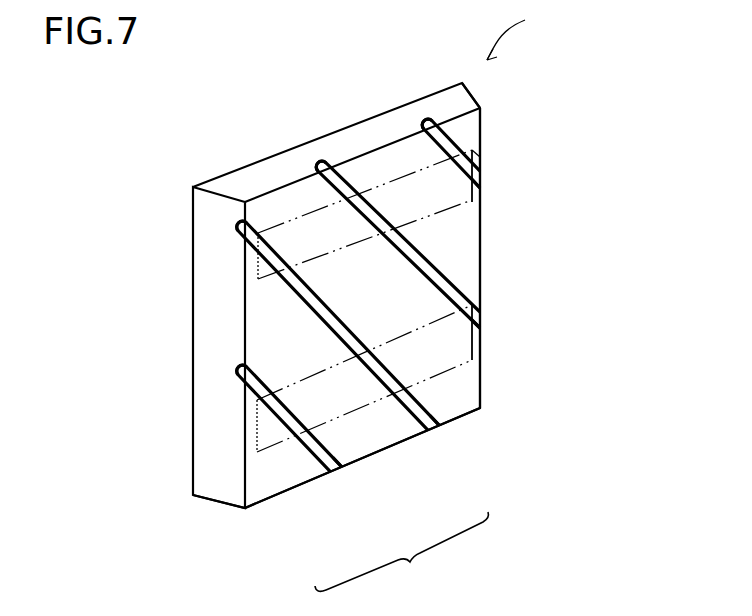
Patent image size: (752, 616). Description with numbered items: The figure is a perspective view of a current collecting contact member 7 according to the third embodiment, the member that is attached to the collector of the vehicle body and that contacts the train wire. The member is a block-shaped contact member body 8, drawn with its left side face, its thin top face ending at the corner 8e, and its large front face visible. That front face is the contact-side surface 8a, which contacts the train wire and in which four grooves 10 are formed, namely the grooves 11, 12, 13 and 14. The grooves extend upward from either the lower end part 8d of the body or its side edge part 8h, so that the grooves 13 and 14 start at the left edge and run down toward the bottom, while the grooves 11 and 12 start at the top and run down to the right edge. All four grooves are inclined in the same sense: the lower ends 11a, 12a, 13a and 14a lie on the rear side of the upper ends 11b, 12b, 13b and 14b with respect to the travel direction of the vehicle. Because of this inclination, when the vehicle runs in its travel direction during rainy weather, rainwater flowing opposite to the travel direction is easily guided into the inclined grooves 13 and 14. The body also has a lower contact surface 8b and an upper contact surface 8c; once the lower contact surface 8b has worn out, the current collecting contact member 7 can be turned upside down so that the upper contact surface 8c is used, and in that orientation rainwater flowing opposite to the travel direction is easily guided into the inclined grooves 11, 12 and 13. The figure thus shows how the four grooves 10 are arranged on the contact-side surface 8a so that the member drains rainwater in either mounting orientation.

The current collecting contact member 7 is at (516, 30).
The contact member body 8 is at (231, 182).
The contact-side surface 8a is at (268, 320).
The lower contact surface 8b is at (257, 433).
The upper contact surface 8c is at (474, 152).
The lower end part 8d is at (263, 503).
The top corner of block 8e is at (466, 118).
The side edge part 8h is at (481, 248).
The grooves 10 is at (401, 558).
The groove 11 is at (465, 150).
The lower end of groove 11a is at (480, 180).
The upper end of groove 11b is at (426, 122).
The groove 12 is at (402, 248).
The lower end of groove 12a is at (481, 321).
The upper end of groove 12b is at (321, 166).
The groove 13 is at (368, 356).
The lower end of groove 13a is at (446, 430).
The upper end of groove 13b is at (237, 230).
The groove 14 is at (313, 436).
The lower end of groove 14a is at (340, 462).
The upper end of groove 14b is at (237, 372).